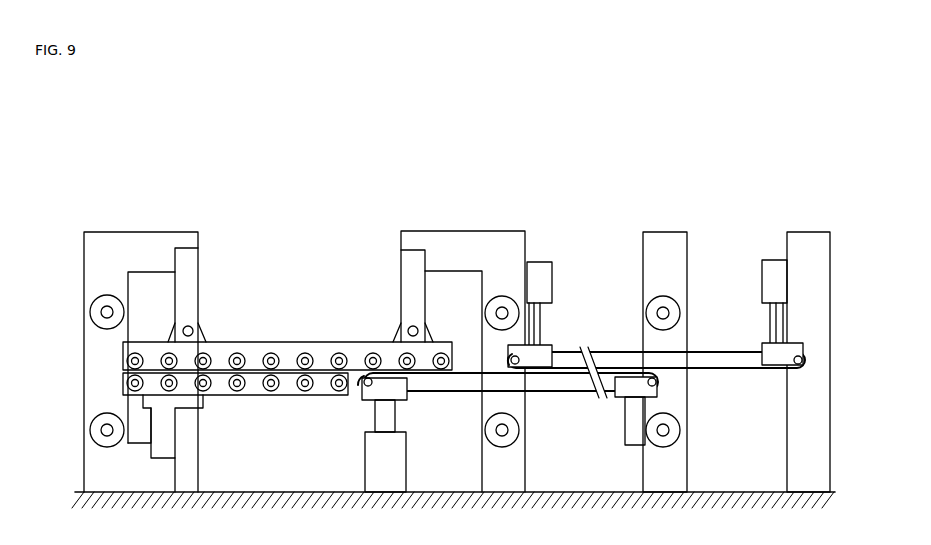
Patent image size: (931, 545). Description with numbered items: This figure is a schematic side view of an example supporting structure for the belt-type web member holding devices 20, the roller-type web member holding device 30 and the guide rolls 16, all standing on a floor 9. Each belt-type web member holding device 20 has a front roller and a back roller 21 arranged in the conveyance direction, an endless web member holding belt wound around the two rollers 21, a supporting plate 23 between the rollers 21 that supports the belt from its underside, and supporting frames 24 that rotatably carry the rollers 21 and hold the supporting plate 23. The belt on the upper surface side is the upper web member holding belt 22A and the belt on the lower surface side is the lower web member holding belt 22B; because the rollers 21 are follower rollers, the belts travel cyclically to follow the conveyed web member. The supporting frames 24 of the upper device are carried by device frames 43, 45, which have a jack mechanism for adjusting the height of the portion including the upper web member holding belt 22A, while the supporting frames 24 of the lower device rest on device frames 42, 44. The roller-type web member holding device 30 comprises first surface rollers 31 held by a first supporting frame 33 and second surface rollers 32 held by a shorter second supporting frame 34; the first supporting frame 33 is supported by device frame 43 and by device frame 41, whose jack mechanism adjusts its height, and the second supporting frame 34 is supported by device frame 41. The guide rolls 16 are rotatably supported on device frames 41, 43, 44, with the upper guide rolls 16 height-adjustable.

The floor 9 is at (278, 492).
The guide roll 16 is at (98, 300).
The belt-type web member holding device 20 is at (754, 339).
The roller 21 is at (365, 387).
The upper web member holding belt 22A is at (586, 352).
The lower web member holding belt 22B is at (553, 393).
The supporting plate 23 is at (584, 390).
The supporting frame 24 is at (395, 413).
The roller-type web member holding device 30 is at (287, 366).
The first surface roller 31 is at (131, 345).
The second surface roller 32 is at (134, 392).
The first supporting frame 33 is at (241, 342).
The second supporting frame 34 is at (233, 408).
The device frame 41 is at (84, 467).
The device frame 42 is at (365, 467).
The device frame 43 is at (482, 478).
The device frame 44 is at (688, 431).
The device frame 45 is at (787, 467).